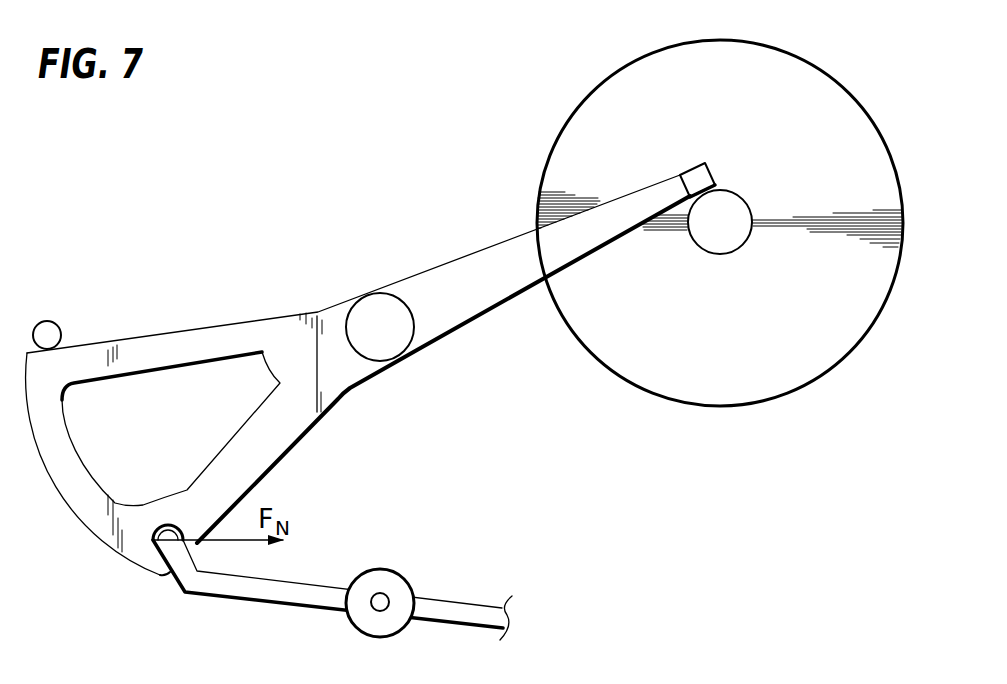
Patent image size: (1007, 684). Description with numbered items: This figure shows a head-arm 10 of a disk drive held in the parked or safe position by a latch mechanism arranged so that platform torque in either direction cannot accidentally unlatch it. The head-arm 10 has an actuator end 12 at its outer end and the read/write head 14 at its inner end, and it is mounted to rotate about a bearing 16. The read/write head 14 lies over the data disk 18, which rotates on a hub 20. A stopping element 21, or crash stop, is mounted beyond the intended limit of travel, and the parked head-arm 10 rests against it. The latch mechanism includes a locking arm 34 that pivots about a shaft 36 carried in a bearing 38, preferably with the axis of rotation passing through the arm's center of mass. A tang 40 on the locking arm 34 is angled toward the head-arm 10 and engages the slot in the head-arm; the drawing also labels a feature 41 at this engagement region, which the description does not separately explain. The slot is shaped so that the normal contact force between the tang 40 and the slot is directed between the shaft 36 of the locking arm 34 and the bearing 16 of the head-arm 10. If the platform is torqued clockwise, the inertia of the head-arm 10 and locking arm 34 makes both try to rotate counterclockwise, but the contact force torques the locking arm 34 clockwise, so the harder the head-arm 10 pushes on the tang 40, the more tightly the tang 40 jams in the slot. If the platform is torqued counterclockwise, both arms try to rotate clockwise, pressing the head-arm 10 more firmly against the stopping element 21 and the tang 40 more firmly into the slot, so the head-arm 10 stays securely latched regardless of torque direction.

The head-arm assembly 10 is at (432, 186).
The actuator end 12 is at (182, 338).
The read/write head 14 is at (700, 178).
The bearing 16 is at (372, 317).
The data disk 18 is at (607, 118).
The hub 20 is at (707, 237).
The stopping element 21 is at (50, 322).
The locking arm 34 is at (242, 602).
The shaft 36 is at (375, 609).
The bearing 38 is at (387, 567).
The tang 40 is at (170, 577).
The hook pivot 41 is at (168, 524).